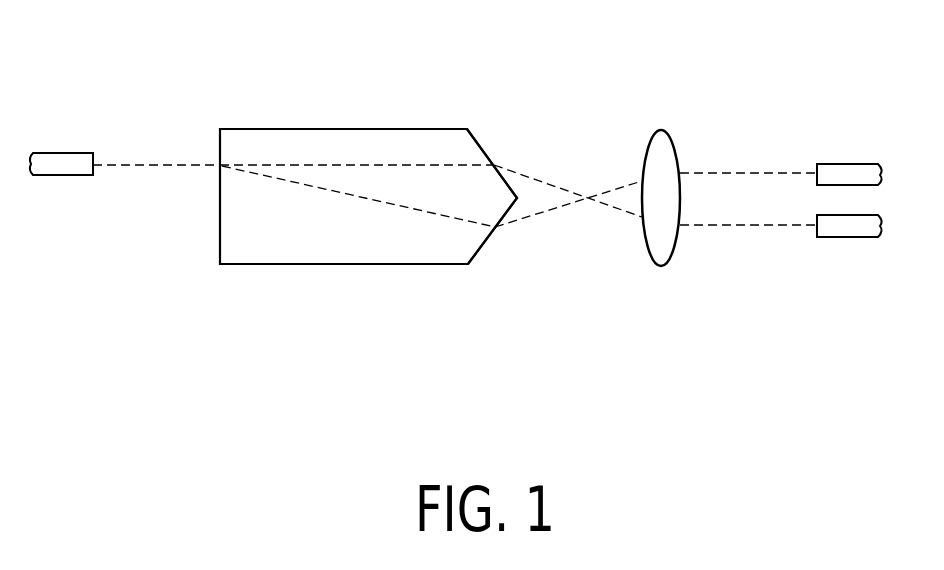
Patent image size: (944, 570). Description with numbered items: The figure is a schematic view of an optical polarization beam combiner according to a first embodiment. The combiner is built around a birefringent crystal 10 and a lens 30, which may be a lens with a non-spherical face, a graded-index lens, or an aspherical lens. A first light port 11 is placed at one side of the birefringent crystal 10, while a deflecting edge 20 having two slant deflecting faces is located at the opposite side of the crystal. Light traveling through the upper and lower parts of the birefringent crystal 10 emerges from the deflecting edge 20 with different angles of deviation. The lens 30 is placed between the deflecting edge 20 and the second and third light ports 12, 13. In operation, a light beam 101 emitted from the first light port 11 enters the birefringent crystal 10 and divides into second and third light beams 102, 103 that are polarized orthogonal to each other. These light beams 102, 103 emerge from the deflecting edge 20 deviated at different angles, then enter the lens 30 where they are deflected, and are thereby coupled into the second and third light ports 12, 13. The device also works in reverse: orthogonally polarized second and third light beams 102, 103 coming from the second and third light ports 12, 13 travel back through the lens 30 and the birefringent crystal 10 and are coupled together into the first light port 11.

The birefringent crystal 10 is at (326, 129).
The first light port 11 is at (58, 176).
The second light port 12 is at (848, 162).
The third light port 13 is at (848, 238).
The deflecting edge 20 is at (486, 243).
The lens 30 is at (650, 253).
The light beam 101 is at (152, 166).
The second light beam 102 is at (745, 172).
The third light beam 103 is at (745, 226).